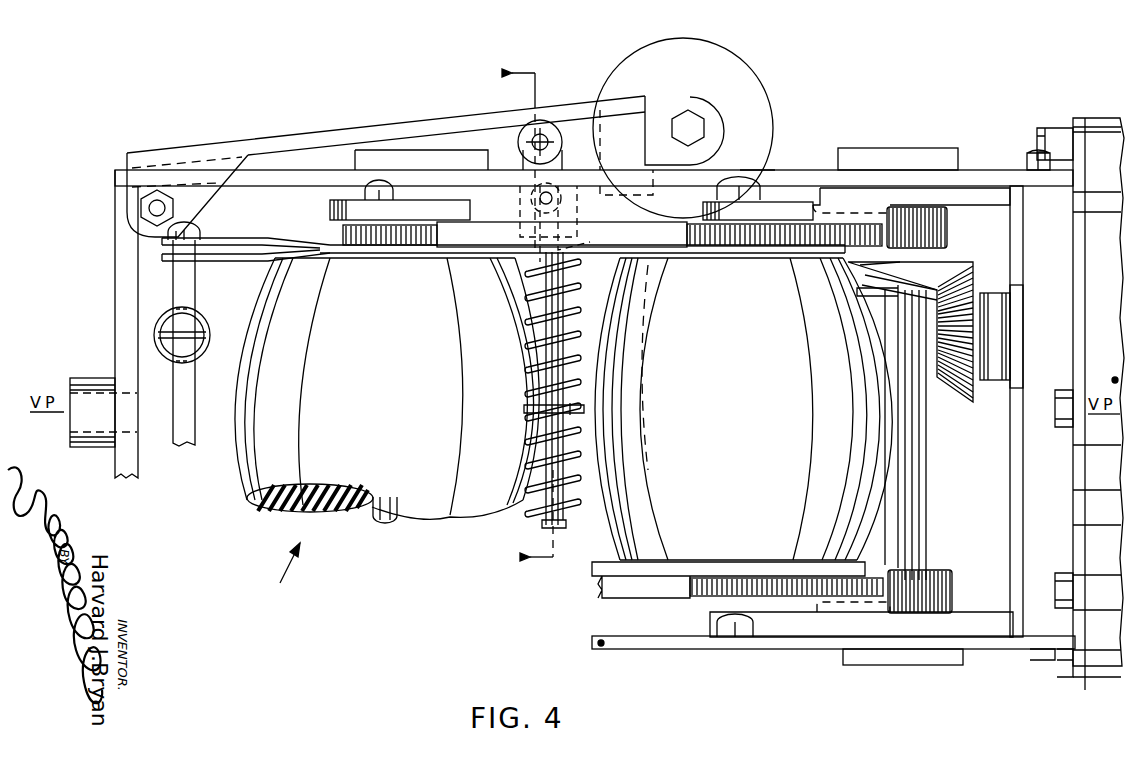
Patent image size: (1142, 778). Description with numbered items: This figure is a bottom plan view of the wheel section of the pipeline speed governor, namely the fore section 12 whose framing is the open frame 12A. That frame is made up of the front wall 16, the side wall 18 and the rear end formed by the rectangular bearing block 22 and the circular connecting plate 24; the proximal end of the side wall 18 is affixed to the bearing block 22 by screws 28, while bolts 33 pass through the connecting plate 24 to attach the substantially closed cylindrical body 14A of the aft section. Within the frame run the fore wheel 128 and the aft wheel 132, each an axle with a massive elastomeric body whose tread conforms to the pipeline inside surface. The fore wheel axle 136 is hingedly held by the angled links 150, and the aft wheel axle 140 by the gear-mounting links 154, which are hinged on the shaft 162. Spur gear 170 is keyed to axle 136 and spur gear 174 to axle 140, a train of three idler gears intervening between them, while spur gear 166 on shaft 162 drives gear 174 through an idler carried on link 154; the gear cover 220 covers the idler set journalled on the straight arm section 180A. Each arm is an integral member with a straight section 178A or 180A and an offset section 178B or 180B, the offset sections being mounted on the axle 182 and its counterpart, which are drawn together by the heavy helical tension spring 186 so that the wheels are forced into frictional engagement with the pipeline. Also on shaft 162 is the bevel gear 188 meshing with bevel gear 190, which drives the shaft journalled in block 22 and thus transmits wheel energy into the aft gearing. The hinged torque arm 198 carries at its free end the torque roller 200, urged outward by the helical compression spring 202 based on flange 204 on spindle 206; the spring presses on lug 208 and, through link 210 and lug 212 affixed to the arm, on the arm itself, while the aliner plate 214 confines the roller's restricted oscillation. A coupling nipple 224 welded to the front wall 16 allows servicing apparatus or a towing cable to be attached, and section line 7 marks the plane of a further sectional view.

The section line 7- 7 is at (541, 322).
The fore section 12 is at (279, 579).
The open frame 12A is at (598, 643).
The cylindrical body 14A is at (1106, 384).
The front wall 16 is at (115, 258).
The side wall 18 is at (792, 170).
The rectangular bearing block 22 is at (1023, 482).
The circular connecting plate 24 is at (1073, 347).
The screws 28 is at (1028, 153).
The bolts 33 is at (1055, 127).
The fore wheel 128 is at (410, 400).
The aft wheel 132 is at (761, 427).
The wheel axle 136 is at (390, 522).
The wheel axle 140 is at (758, 168).
The angled links 150 is at (328, 210).
The gear-mounting links 154 is at (960, 205).
The shaft 162 is at (920, 456).
The spur gear 166 is at (947, 236).
The spur gear 170 is at (398, 248).
The spur gear 174 is at (707, 247).
The straight arm section 178A is at (622, 283).
The offset arm section 178B is at (242, 263).
The straight arm section 180A is at (593, 572).
The offset arm section 180B is at (213, 233).
The axle 182 is at (190, 446).
The helical tension spring 186 is at (206, 352).
The bevel gear 188 is at (878, 316).
The bevel gear 190 is at (962, 400).
The torque arm 198 is at (298, 137).
The torque roller 200 is at (698, 89).
The helical compression spring 202 is at (578, 350).
The flange 204 is at (584, 409).
The spindle 206 is at (545, 522).
The lug 208 is at (585, 237).
The link 210 is at (488, 158).
The lug 212 is at (508, 138).
The aliner 214 is at (645, 157).
The gear cover 220 is at (472, 252).
The coupling nipple 224 is at (383, 145).